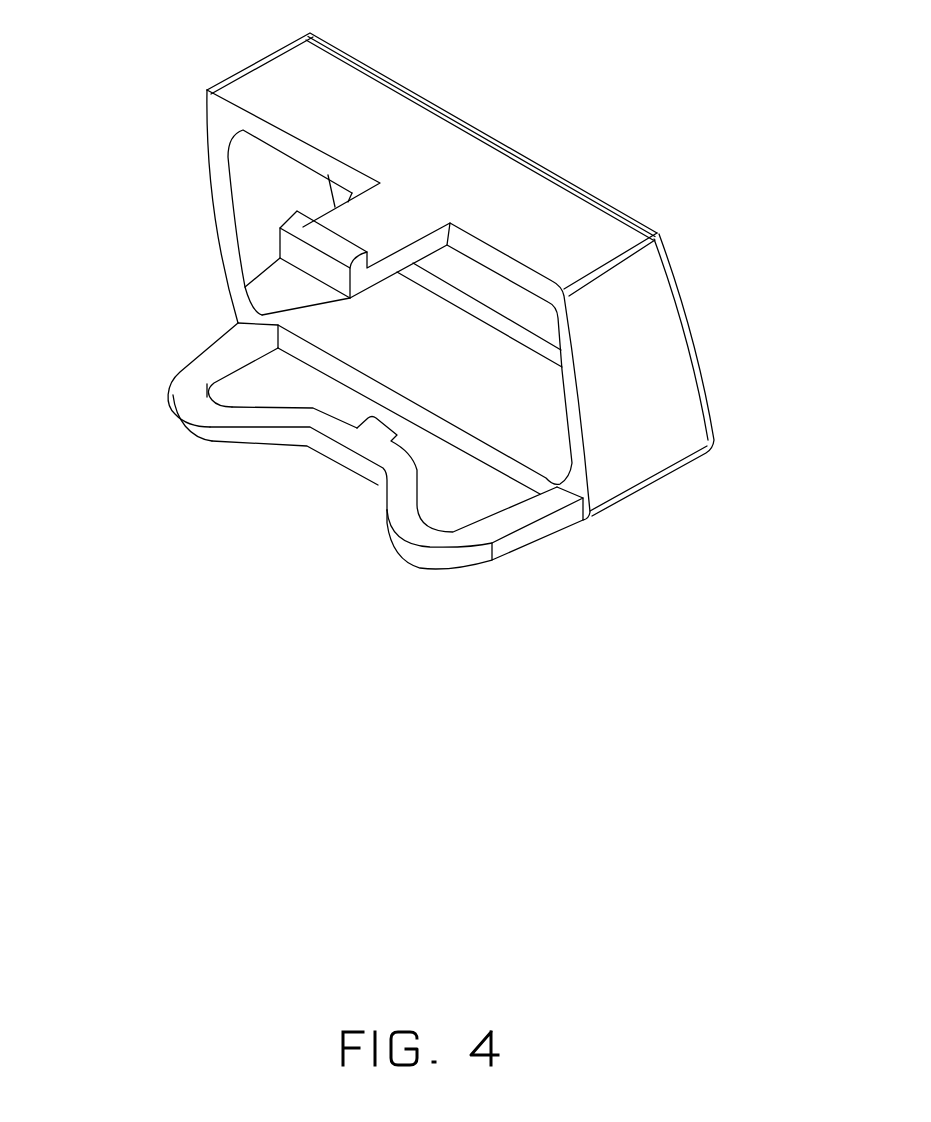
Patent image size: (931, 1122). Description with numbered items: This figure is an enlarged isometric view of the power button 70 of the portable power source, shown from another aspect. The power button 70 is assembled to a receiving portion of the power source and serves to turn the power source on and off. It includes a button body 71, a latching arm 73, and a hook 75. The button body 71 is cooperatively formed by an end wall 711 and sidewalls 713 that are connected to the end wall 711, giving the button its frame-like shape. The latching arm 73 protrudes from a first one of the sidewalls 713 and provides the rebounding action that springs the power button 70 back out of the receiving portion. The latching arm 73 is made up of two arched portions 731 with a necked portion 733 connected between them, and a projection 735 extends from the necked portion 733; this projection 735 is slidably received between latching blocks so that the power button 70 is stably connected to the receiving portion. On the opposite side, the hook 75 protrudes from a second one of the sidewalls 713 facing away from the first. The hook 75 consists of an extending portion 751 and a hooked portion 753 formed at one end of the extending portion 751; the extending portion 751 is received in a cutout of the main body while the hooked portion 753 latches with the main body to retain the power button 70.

The power button 70 is at (427, 306).
The button body 71 is at (500, 276).
The end wall 711 is at (565, 175).
The sidewalls 713 is at (688, 375).
The latching arm 73 is at (370, 460).
The arched portions 731 is at (208, 438).
The necked portion 733 is at (340, 452).
The projection 735 is at (427, 477).
The hook 75 is at (311, 255).
The extending portion 751 is at (350, 220).
The hooked portion 753 is at (305, 235).